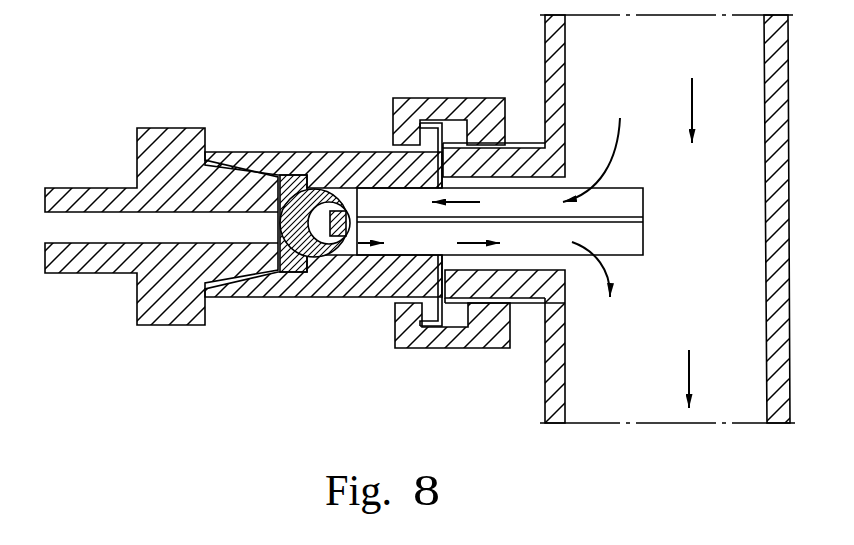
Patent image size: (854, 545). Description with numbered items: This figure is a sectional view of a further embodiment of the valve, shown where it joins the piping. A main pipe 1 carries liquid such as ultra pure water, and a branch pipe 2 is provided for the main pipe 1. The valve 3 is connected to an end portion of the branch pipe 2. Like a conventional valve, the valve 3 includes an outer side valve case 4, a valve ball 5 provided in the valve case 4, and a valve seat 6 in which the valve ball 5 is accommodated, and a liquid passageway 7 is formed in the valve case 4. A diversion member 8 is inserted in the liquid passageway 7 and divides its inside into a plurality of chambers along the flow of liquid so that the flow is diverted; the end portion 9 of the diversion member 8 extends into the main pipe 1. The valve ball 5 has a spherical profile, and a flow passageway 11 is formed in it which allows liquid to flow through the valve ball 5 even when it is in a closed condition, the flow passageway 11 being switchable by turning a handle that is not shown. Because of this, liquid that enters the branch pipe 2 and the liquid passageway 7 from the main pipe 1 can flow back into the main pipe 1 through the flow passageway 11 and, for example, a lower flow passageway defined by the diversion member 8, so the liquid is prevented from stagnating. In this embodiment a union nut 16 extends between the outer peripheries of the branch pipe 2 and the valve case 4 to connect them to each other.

The main pipe 1 is at (548, 38).
The branch pipe 2 is at (530, 285).
The valve 3 is at (278, 300).
The valve case 4 is at (165, 148).
The valve ball 5 is at (313, 262).
The valve seat 6 is at (287, 172).
The liquid passageway 7 is at (343, 257).
The diversion member 8 is at (397, 240).
The end portion 9 is at (645, 198).
The flow passageway 11 is at (320, 195).
The union nut 16 is at (436, 108).